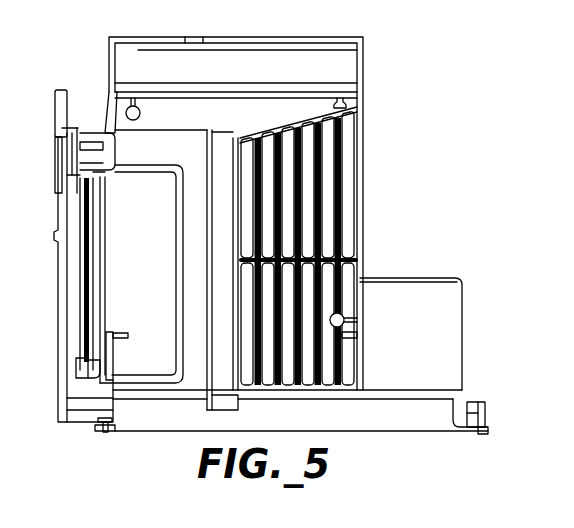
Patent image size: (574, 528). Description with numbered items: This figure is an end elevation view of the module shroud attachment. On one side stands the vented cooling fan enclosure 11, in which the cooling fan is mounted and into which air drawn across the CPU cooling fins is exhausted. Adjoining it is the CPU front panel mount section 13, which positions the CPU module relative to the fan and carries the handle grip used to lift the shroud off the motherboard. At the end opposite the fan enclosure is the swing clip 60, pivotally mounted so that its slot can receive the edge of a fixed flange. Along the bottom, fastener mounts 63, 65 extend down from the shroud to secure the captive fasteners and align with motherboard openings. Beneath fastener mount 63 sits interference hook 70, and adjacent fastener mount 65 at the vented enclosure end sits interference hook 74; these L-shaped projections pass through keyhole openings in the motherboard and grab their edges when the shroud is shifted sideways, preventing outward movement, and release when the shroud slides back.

The vented cooling fan enclosure 11 is at (360, 140).
The CPU front panel mount section 13 is at (58, 258).
The swing clip 60 is at (53, 108).
The fastener mount 63 is at (113, 422).
The fastener mount 65 is at (470, 402).
The interference hook 70 is at (106, 432).
The interference hook 74 is at (488, 413).